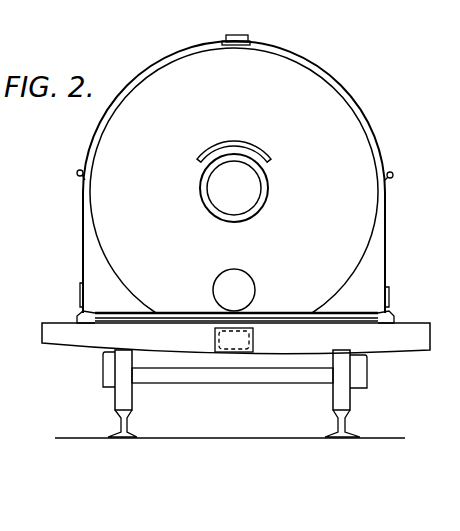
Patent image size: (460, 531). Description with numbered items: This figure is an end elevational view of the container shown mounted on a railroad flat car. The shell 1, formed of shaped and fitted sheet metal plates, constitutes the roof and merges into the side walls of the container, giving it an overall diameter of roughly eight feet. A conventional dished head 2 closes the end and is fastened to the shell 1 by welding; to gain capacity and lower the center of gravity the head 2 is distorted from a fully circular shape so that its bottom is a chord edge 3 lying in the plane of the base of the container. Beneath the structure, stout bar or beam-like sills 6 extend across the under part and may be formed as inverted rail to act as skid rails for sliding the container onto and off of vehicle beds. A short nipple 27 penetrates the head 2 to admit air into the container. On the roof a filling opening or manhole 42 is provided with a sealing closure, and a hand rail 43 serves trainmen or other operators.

The shell 1 is at (361, 108).
The dished head 2 is at (360, 143).
The chord edge of head 3 is at (169, 315).
The sill 6 is at (76, 313).
The nipple 27 is at (240, 283).
The manhole 42 is at (246, 34).
The hand rail 43 is at (77, 172).